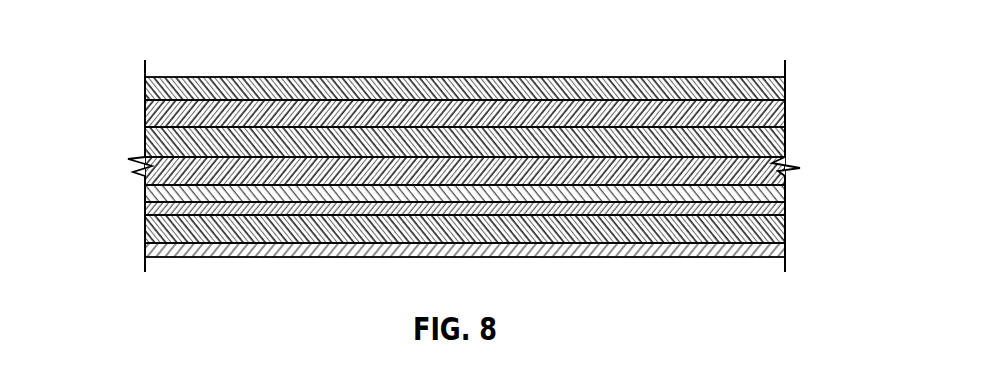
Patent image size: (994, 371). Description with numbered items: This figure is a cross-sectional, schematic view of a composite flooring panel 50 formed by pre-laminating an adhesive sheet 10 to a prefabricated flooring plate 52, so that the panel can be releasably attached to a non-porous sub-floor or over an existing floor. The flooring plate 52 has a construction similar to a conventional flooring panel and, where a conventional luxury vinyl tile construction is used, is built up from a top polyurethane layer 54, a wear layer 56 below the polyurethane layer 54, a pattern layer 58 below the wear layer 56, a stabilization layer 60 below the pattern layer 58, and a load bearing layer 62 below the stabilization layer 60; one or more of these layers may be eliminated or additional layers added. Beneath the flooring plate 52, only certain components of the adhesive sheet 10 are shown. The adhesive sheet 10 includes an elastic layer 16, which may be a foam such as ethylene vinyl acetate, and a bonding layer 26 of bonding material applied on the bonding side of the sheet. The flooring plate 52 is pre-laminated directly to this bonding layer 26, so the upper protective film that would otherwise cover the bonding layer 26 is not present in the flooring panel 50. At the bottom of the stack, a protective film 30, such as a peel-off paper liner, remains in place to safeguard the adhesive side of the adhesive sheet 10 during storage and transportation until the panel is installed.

The adhesive sheet 10 is at (463, 262).
The elastic layer 16 is at (145, 228).
The bonding layer 26 is at (145, 205).
The protective film 30 is at (165, 258).
The composite flooring panel 50 is at (483, 168).
The flooring plate 52 is at (441, 108).
The polyurethane layer 54 is at (149, 75).
The wear layer 56 is at (144, 113).
The pattern layer 58 is at (144, 142).
The stabilization layer 60 is at (144, 176).
The load bearing layer 62 is at (145, 191).